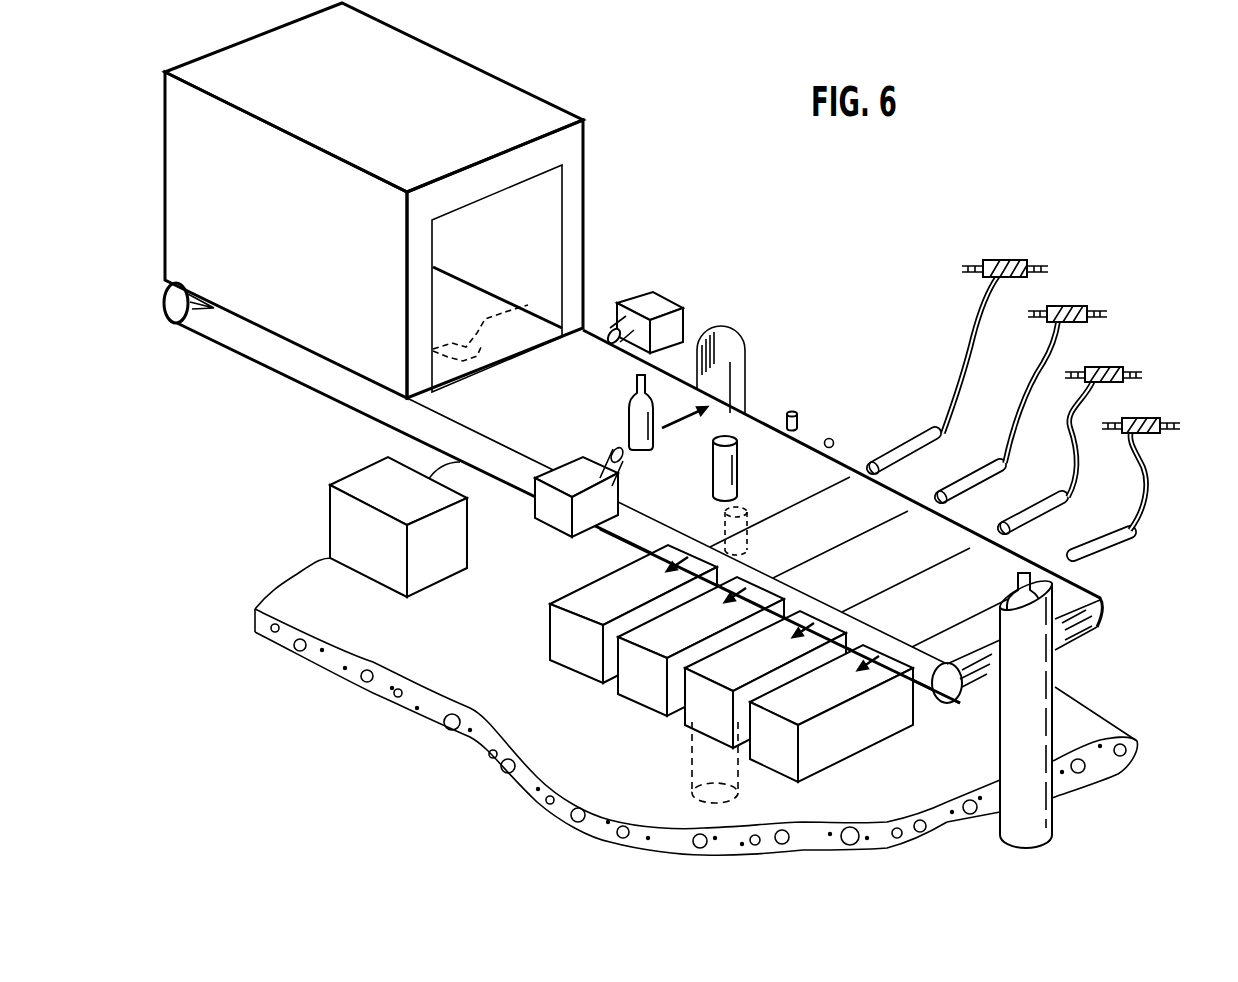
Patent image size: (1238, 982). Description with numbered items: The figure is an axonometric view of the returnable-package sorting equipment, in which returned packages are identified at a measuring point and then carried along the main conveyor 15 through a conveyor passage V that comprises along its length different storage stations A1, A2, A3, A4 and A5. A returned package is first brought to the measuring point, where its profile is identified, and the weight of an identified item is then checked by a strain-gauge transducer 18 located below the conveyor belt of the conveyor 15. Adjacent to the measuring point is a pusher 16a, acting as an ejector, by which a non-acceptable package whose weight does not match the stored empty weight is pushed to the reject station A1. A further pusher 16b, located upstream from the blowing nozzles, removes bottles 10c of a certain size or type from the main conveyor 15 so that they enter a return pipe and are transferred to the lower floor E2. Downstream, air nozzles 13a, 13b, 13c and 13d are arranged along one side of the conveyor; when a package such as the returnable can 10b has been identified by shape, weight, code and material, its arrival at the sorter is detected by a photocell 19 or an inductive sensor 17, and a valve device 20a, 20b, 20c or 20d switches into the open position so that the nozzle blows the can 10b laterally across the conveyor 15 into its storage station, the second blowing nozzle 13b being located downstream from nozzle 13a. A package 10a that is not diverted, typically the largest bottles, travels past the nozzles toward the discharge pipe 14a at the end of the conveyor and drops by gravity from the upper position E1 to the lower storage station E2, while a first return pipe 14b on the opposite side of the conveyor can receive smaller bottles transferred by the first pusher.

The returned package 10a is at (1011, 590).
The returnable can 10b is at (713, 473).
The bottle 10c is at (629, 427).
The air nozzle 13a is at (905, 447).
The second blowing nozzle 13b is at (970, 477).
The air nozzle 13c is at (1040, 508).
The air nozzle 13d is at (1105, 543).
The return pipe 14a is at (1057, 668).
The first return pipe 14b is at (748, 338).
The conveyor 15 is at (452, 402).
The pusher 16a is at (628, 326).
The pusher 16b is at (603, 520).
The inductive sensor 17 is at (790, 410).
The strain-gauge transducer 18 is at (528, 310).
The photocell 19 is at (834, 439).
The valve device 20a is at (1007, 261).
The valve device 20b is at (1075, 306).
The valve device 20c is at (1115, 367).
The valve device 20d is at (1152, 418).
The reject station A1 is at (360, 560).
The storage station A2 is at (570, 658).
The storage station A3 is at (647, 695).
The storage station A4 is at (697, 718).
The storage station A5 is at (778, 760).
The upper storage space E1 is at (290, 577).
The lower storage space E2 is at (452, 780).
The conveyor passage V is at (533, 412).